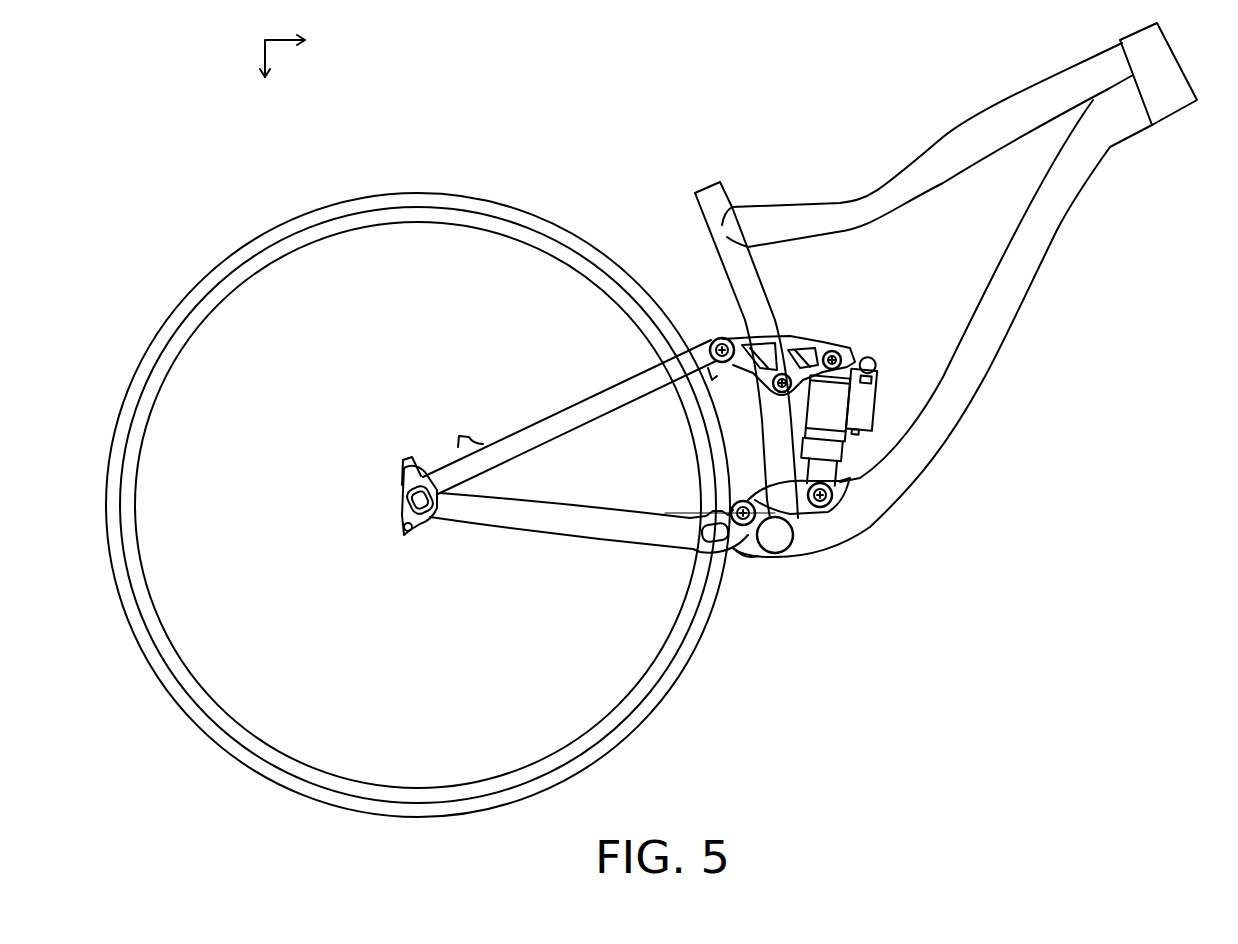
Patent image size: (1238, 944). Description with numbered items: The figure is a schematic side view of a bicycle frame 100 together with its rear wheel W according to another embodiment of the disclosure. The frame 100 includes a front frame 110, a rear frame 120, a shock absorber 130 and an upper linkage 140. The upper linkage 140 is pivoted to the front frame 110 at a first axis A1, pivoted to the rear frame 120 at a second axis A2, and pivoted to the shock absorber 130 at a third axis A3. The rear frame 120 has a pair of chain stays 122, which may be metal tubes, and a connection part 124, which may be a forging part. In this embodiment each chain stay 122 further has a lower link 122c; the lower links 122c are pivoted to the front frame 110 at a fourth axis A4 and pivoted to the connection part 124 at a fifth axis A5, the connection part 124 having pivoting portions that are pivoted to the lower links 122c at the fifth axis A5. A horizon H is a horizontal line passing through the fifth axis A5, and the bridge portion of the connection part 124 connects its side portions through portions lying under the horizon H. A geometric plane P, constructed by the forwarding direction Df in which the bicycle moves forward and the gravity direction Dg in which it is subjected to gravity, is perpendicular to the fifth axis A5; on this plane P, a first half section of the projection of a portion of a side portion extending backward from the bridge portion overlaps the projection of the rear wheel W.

The frame 100 is at (1022, 634).
The front frame 110 is at (1020, 78).
The rear frame 120 is at (531, 402).
The chain stays 122 is at (560, 522).
The lower link 122c is at (815, 536).
The connection part 124 is at (747, 566).
The shock absorber 130 is at (837, 402).
The upper linkage 140 is at (783, 330).
The rear wheel W is at (422, 200).
The horizon H is at (690, 505).
The first axis A1 is at (772, 392).
The second axis A2 is at (716, 340).
The third axis A3 is at (841, 350).
The fourth axis A4 is at (841, 512).
The fifth axis A5 is at (779, 555).
The forwarding direction Df is at (303, 51).
The gravity direction Dg is at (263, 90).
The geometric plane P is at (321, 99).